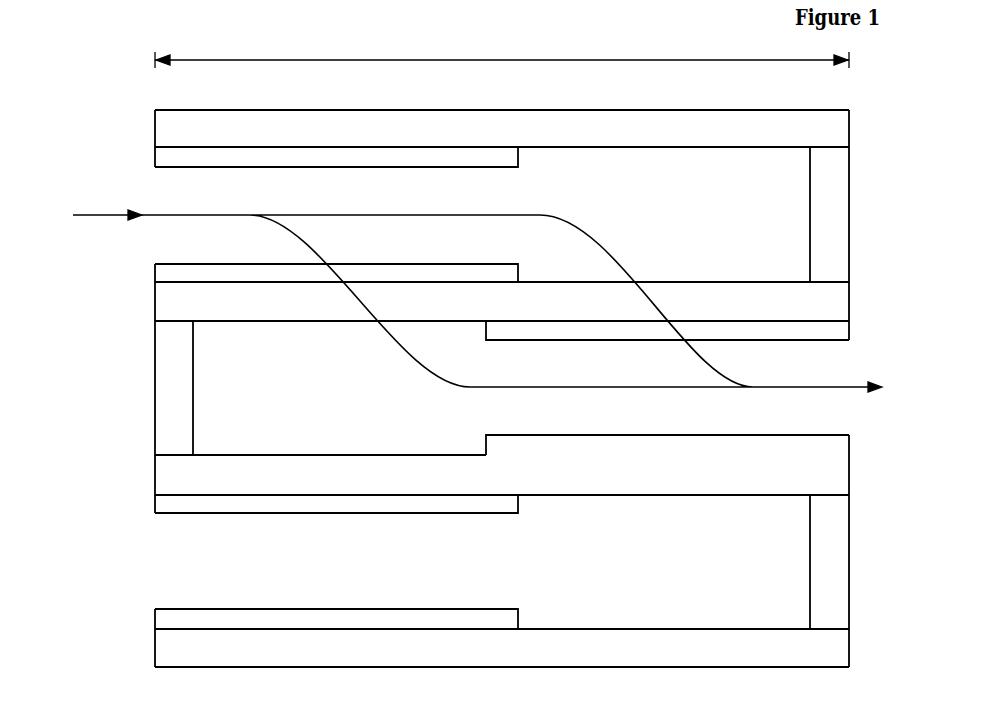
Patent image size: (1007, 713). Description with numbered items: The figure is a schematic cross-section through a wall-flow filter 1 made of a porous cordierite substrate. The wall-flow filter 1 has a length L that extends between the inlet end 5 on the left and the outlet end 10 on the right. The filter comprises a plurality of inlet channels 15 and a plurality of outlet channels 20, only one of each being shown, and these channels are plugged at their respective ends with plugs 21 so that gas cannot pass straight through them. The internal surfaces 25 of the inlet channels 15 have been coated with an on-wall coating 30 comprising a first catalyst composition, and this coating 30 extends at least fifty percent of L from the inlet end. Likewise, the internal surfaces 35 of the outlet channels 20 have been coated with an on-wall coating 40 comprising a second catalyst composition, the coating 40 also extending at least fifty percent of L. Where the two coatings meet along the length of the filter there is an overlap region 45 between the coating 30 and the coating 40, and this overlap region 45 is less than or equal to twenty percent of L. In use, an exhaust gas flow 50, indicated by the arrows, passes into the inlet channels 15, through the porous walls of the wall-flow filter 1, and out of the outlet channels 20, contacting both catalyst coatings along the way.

The wall-flow filter 1 is at (808, 108).
The inlet end 5 is at (155, 303).
The outlet end 10 is at (850, 475).
The inlet channels 15 is at (773, 212).
The outlet channels 20 is at (220, 388).
The plugs 21 is at (830, 245).
The internal surfaces of the inlet channels 25 is at (442, 147).
The on-wall coating 30 is at (210, 167).
The internal surfaces of the outlet channels 35 is at (587, 457).
The on-wall coating 40 is at (790, 340).
The overlap region 45 is at (503, 475).
The exhaust gas flow 50 is at (99, 213).